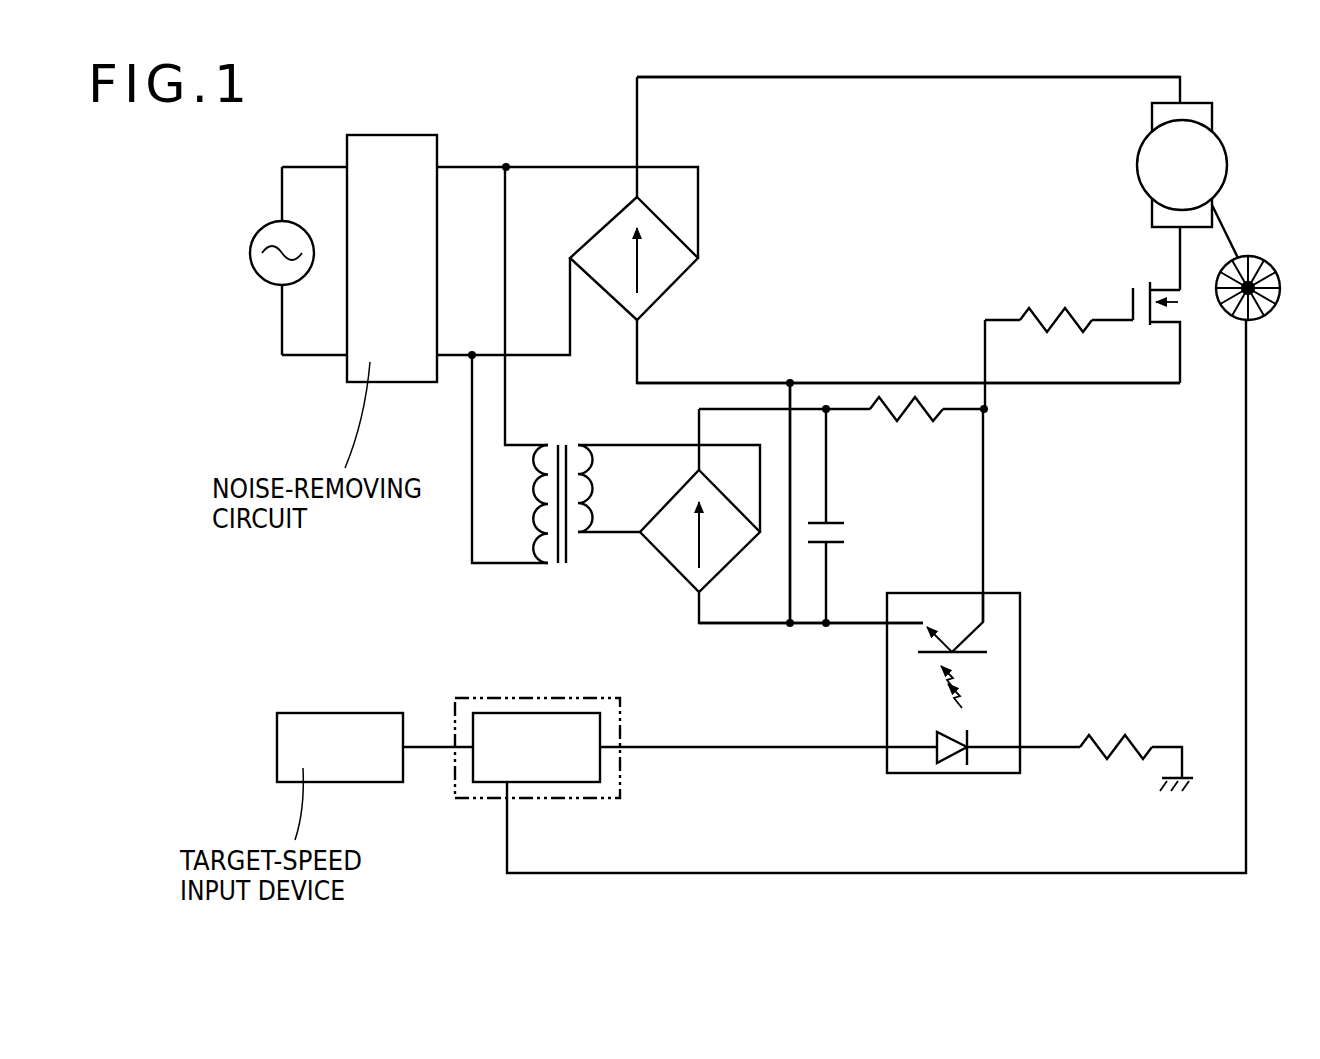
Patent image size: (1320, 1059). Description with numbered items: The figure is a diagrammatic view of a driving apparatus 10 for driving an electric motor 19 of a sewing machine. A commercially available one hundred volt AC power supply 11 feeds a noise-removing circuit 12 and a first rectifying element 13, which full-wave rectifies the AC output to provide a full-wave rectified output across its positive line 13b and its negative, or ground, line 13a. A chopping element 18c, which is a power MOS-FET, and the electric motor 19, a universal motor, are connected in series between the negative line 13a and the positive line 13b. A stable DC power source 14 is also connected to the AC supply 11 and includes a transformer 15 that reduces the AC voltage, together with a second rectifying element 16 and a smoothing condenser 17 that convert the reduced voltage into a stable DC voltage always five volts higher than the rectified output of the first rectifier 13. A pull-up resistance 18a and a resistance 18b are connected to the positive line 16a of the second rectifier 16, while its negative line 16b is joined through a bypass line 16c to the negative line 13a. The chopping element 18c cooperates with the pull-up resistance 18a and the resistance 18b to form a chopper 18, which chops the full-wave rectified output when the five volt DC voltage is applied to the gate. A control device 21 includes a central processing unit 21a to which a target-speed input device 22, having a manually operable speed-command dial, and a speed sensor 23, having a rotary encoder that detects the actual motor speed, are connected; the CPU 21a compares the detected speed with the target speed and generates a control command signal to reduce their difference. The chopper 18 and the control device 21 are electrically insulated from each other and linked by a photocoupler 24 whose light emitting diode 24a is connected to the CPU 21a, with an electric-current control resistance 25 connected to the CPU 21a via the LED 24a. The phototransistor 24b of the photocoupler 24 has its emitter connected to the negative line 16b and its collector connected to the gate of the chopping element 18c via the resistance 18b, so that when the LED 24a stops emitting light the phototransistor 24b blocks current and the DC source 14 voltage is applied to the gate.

The driving apparatus 10 is at (540, 130).
The AC power supply 11 is at (248, 258).
The noise-removing circuit 12 is at (392, 357).
The first rectifying element 13 is at (672, 265).
The negative line of the first rectifier 13a is at (682, 380).
The positive line of the first rectifier 13b is at (728, 77).
The stable DC power source 14 is at (554, 559).
The transformer 15 is at (550, 565).
The second rectifying element 16 is at (658, 542).
The positive line of the second rectifier 16a is at (850, 412).
The negative line of the second rectifier 16b is at (717, 623).
The bypass line 16c is at (790, 498).
The smoothing condenser 17 is at (837, 542).
The chopper 18 is at (1089, 359).
The pull-up resistance 18a is at (880, 405).
The resistance 18b is at (1060, 307).
The chopping element 18c is at (1140, 343).
The electric motor 19 is at (1142, 163).
The control device 21 is at (528, 745).
The central processing unit 21a is at (557, 773).
The target-speed input device 22 is at (368, 768).
The speed sensor 23 is at (1267, 307).
The photocoupler 24 is at (840, 724).
The light emitting diode 24a is at (950, 757).
The phototransistor 24b is at (928, 655).
The electric-current control resistance 25 is at (1095, 733).